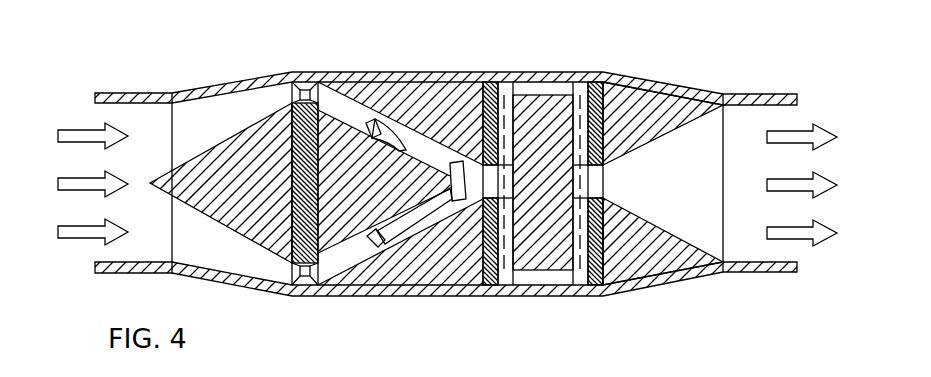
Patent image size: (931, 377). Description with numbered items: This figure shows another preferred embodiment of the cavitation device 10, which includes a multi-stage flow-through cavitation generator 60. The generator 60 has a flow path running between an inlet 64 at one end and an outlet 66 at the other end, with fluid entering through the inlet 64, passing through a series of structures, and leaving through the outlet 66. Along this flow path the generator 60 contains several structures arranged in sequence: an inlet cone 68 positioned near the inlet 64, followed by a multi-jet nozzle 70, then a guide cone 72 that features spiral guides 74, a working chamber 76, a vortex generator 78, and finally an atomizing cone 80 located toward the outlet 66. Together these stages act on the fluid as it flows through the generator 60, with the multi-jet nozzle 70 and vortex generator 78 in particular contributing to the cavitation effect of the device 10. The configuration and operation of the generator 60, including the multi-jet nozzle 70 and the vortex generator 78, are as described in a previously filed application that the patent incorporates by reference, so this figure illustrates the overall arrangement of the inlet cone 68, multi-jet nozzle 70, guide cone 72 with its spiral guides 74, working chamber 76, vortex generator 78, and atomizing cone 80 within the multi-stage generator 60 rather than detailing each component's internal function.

The cavitation device 10 is at (156, 49).
The multi-stage generator 60 is at (133, 218).
The inlet 64 is at (96, 118).
The outlet 66 is at (797, 118).
The inlet cone 68 is at (465, 196).
The multi-jet nozzle 70 is at (446, 202).
The guide cone 72 is at (465, 200).
The spiral guides 74 is at (409, 230).
The working chamber 76 is at (446, 206).
The vortex generator 78 is at (465, 200).
The atomizing cone 80 is at (465, 192).